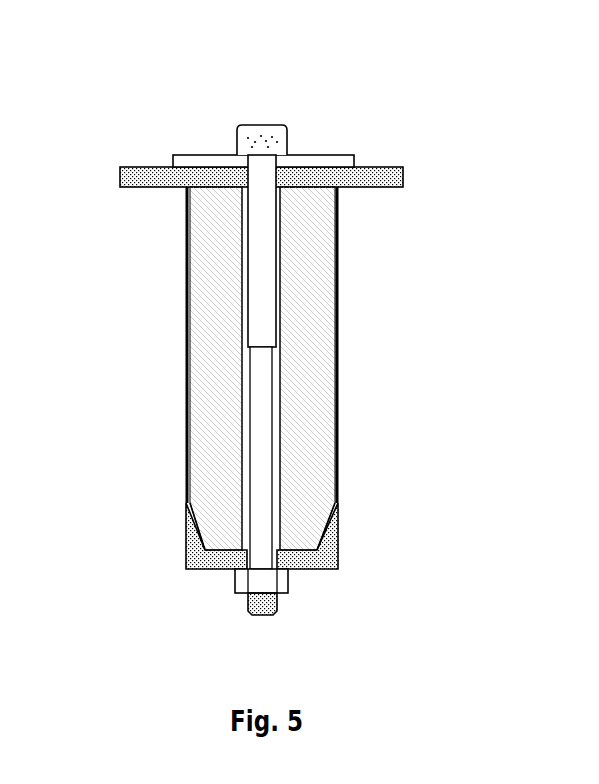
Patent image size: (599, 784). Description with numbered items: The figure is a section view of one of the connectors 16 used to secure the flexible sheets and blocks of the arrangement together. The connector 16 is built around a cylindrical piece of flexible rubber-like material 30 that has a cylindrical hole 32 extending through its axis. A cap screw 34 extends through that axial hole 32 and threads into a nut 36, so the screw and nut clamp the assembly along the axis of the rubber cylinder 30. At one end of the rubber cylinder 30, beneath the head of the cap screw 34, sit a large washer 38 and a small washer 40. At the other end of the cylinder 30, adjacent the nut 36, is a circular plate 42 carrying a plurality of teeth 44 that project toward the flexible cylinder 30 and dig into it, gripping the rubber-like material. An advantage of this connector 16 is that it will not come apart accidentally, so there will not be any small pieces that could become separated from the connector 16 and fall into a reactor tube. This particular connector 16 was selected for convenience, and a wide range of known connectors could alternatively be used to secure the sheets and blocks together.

The connector 16 is at (140, 102).
The cylindrical piece of flexible rubber-like material 30 is at (337, 313).
The cylindrical hole 32 is at (248, 404).
The cap screw 34 is at (290, 127).
The nut 36 is at (290, 580).
The large washer 38 is at (402, 188).
The small washer 40 is at (350, 153).
The circular plate 42 is at (215, 572).
The teeth 44 is at (187, 540).